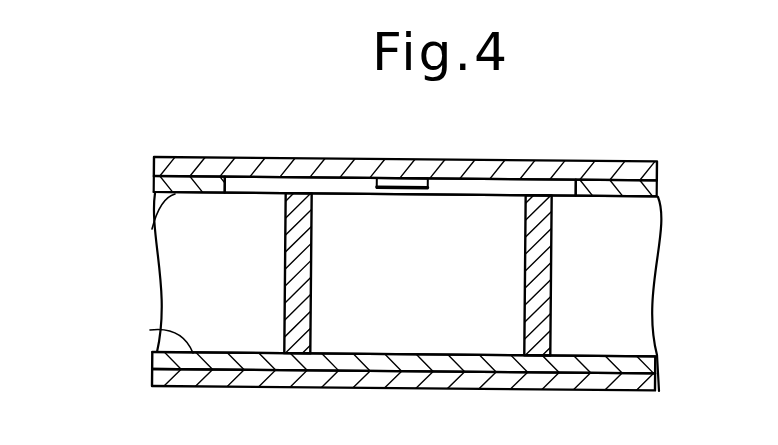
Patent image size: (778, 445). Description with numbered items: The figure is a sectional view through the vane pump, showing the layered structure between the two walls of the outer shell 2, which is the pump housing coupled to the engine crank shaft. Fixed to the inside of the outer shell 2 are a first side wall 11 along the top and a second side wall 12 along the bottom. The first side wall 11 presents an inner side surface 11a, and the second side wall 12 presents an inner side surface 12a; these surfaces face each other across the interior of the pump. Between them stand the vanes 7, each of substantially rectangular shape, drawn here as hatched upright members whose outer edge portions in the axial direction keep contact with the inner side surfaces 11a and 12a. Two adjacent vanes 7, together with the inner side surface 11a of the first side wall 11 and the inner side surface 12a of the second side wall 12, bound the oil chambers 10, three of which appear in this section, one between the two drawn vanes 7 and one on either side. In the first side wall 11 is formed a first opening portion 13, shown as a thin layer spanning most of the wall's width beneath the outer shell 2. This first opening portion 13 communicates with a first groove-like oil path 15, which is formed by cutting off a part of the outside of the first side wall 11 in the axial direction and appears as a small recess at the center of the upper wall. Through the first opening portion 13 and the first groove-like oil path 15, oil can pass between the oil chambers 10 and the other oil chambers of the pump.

The outer shell 2 is at (634, 167).
The vane 7 is at (295, 331).
The oil chamber 10 is at (240, 257).
The first side wall 11 is at (650, 189).
The inner side surface of the first side wall 11a is at (150, 229).
The second side wall 12 is at (654, 363).
The inner side surface of the second side wall 12a is at (150, 330).
The first opening portion 13 is at (327, 190).
The first groove-like oil path 15 is at (390, 178).